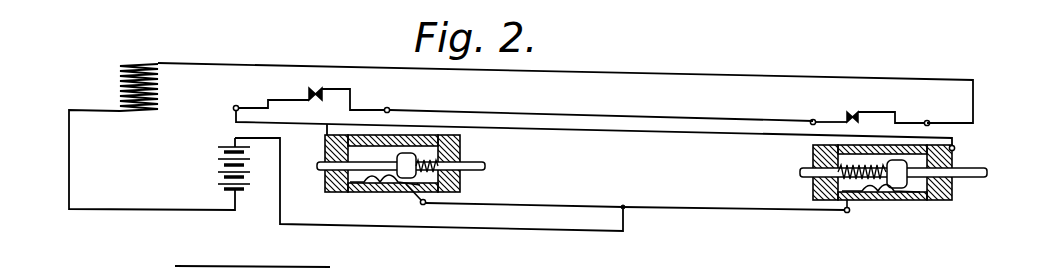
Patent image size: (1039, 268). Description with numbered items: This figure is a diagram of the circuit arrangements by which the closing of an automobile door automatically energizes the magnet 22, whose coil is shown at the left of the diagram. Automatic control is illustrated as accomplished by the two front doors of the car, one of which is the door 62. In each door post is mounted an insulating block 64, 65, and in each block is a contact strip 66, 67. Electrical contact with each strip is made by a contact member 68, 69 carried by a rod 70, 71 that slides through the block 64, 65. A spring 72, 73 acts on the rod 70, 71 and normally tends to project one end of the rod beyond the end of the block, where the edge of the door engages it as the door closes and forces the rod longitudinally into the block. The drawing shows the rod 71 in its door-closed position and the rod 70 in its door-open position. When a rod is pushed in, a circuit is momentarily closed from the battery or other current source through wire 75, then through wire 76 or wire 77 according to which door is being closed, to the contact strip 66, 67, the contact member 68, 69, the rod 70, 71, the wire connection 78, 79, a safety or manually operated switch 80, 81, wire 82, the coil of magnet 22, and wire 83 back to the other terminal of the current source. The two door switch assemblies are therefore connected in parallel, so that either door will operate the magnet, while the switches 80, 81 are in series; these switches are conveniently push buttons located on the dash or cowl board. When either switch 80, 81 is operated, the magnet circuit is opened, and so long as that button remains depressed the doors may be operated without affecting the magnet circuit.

The magnet 22 is at (157, 100).
The front door 62 is at (352, 260).
The insulating block 64 is at (905, 145).
The insulating block 65 is at (450, 140).
The contact strip 66 is at (869, 197).
The contact strip 67 is at (390, 188).
The contact member 68 is at (900, 207).
The contact member 69 is at (406, 152).
The rod 70 is at (800, 173).
The rod 71 is at (410, 154).
The spring 72 is at (873, 144).
The spring 73 is at (426, 205).
The wire 75 is at (524, 231).
The wire 76 is at (748, 207).
The wire 77 is at (523, 190).
The wire connection 78 is at (717, 137).
The wire connection 79 is at (323, 126).
The safety or manually operated switch 80 is at (311, 93).
The safety or manually operated switch 81 is at (874, 110).
The wire 82 is at (606, 72).
The wire 83 is at (159, 160).